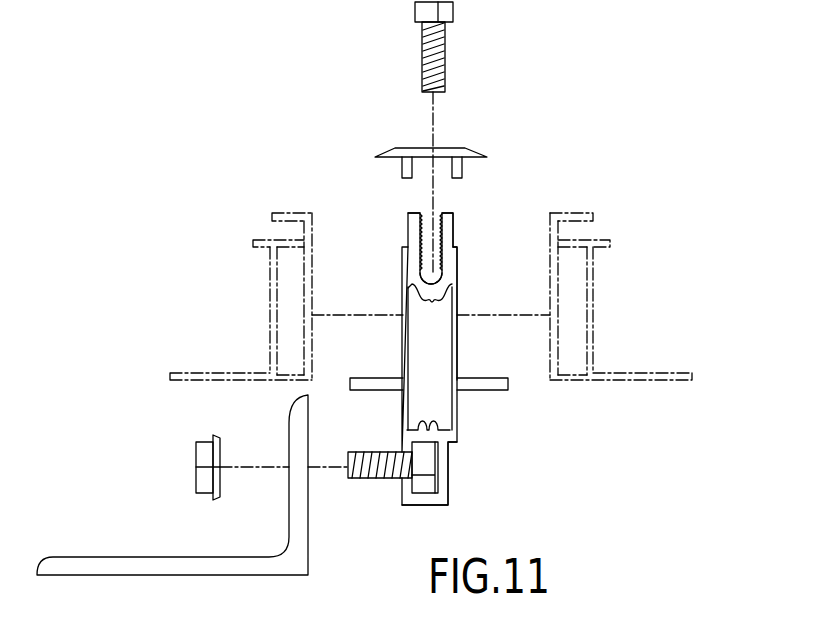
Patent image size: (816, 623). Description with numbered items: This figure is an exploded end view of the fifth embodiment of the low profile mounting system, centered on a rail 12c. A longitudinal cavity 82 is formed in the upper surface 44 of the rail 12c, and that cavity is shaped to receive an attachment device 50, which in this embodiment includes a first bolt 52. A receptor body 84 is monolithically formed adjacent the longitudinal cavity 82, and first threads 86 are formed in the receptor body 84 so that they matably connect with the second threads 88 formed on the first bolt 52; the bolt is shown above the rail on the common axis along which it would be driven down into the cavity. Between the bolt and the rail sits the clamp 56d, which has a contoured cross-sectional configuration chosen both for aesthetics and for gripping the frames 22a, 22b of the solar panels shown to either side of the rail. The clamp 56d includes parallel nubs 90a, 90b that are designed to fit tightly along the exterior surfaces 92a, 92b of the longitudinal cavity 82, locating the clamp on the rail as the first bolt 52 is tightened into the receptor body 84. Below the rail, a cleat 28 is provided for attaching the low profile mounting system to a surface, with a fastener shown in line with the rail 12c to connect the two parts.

The attachment device 50 is at (468, 108).
The first bolt 52 is at (422, 66).
The second threads 88 is at (422, 87).
The clamp 56d is at (463, 148).
The parallel nub 90a is at (462, 166).
The parallel nub 90b is at (378, 158).
The upper surface 44 is at (410, 213).
The first threads 86 is at (437, 219).
The exterior surface 92a is at (455, 225).
The exterior surface 92b is at (408, 232).
The longitudinal cavity 82 is at (426, 268).
The receptor body 84 is at (452, 270).
The rail 12c is at (457, 418).
The cleat 28 is at (123, 557).
The frame 22a is at (594, 288).
The frame 22b is at (270, 268).